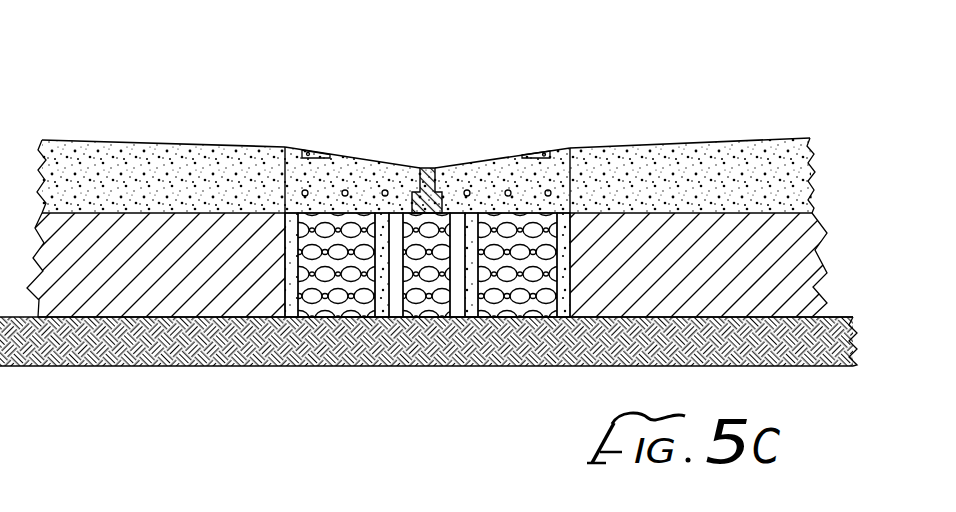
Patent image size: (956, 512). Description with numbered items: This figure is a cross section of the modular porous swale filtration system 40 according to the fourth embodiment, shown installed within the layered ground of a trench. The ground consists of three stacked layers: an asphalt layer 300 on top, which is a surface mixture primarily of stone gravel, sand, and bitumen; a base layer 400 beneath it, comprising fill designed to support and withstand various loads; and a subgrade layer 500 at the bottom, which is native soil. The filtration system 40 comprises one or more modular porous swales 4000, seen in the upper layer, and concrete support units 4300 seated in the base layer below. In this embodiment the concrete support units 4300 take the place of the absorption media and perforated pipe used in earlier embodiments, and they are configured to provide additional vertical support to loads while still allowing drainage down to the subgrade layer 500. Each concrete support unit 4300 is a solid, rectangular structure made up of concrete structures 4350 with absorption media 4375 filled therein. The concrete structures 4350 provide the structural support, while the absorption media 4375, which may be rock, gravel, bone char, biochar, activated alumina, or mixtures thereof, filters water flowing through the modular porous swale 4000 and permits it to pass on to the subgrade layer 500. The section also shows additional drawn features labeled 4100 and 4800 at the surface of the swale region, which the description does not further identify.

The modular porous swale filtration system 40 is at (134, 79).
The asphalt layer 300 is at (822, 145).
The base layer 400 is at (833, 218).
The subgrade layer 500 is at (865, 317).
The modular porous swale 4000 is at (300, 134).
The sloped surface 4100 is at (365, 153).
The fastener stud 4800 is at (433, 163).
The concrete support unit 4300 is at (527, 212).
The concrete structure 4350 is at (382, 310).
The absorption media 4375 is at (513, 290).